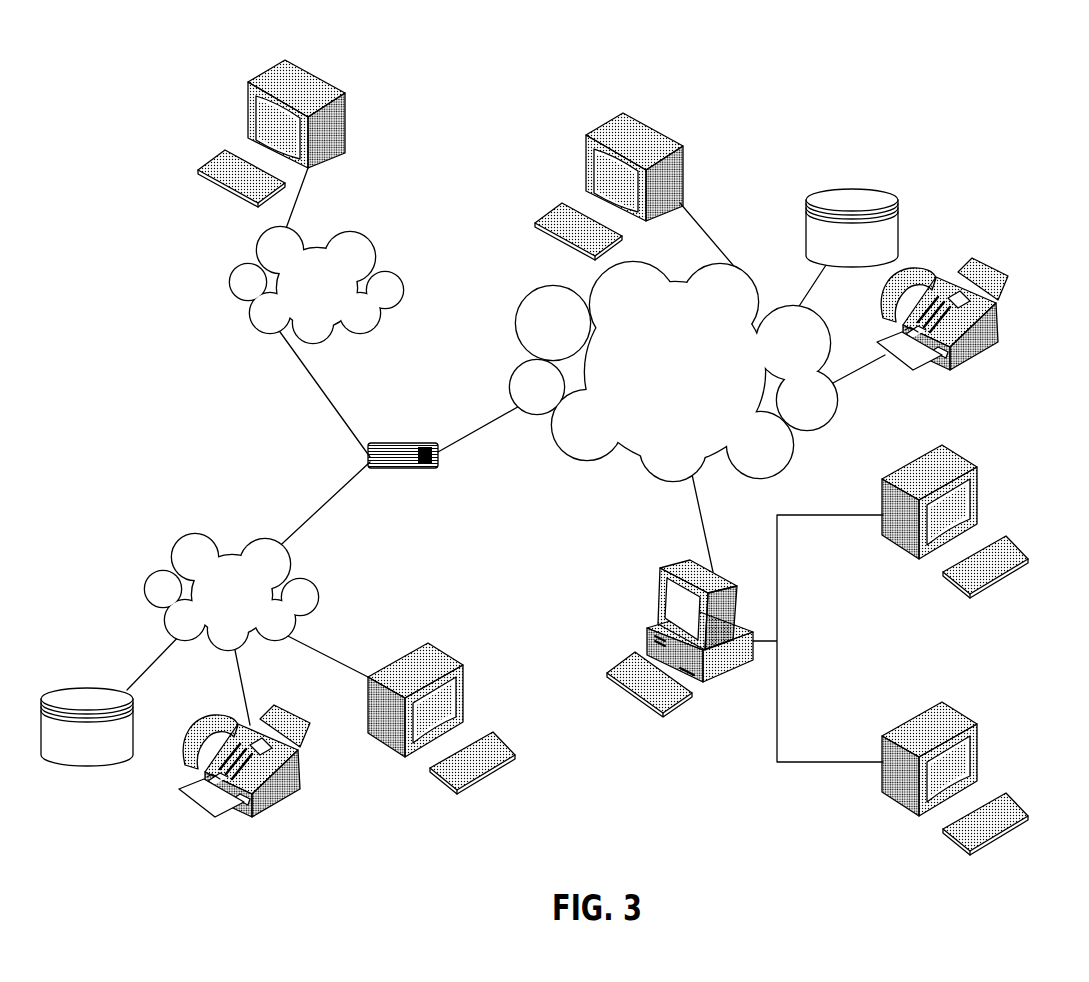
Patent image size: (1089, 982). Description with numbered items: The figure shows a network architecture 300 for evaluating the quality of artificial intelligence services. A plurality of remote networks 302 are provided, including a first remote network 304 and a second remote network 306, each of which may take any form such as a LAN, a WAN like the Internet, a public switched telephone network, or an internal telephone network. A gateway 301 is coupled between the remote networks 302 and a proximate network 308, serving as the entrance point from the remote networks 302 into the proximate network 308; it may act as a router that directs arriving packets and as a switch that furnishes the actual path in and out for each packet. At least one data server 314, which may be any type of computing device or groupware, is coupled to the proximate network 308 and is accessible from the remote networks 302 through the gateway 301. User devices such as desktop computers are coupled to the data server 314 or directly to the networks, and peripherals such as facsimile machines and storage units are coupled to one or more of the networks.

The network architecture 300 is at (600, 29).
The gateway 301 is at (403, 443).
The remote networks 302 is at (215, 370).
The first remote network 304 is at (148, 567).
The second remote network 306 is at (405, 292).
The proximate network 308 is at (802, 438).
The data server 314 is at (657, 595).